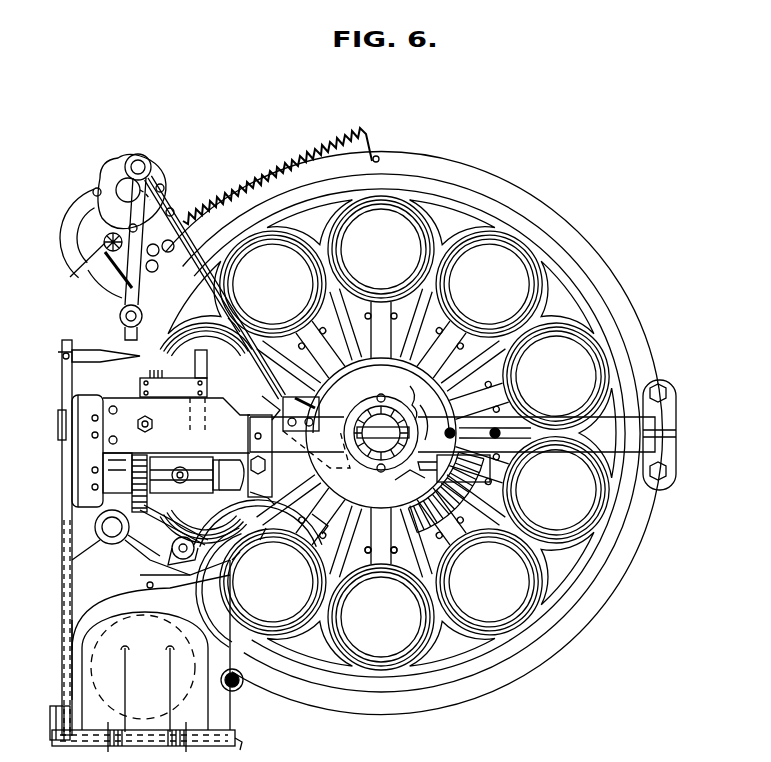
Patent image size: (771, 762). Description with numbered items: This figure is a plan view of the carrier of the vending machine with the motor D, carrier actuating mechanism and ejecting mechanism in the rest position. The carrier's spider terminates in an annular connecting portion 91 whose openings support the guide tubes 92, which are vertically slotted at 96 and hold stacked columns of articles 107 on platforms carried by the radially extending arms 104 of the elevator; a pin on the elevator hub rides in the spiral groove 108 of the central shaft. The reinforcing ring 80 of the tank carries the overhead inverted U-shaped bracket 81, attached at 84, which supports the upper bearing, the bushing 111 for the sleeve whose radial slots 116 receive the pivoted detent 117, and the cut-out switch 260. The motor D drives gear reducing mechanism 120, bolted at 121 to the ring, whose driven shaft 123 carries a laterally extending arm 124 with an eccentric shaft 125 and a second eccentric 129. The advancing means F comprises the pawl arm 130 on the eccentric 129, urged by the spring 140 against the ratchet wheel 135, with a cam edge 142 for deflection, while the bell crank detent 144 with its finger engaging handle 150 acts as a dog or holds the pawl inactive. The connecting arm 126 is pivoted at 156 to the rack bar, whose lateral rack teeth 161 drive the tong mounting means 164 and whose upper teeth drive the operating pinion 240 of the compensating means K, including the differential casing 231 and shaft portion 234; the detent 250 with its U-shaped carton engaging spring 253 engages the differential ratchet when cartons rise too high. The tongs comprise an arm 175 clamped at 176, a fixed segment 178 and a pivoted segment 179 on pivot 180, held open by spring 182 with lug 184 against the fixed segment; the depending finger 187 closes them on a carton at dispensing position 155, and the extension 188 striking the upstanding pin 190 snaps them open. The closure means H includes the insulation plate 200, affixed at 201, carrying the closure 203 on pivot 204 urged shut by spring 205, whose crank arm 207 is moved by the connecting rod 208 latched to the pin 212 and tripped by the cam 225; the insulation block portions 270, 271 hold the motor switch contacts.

The reinforcing ring 80 is at (588, 613).
The annular connecting portion 91 is at (578, 582).
The guide tubes 92 is at (407, 663).
The articles 107 is at (391, 433).
The pawl arm 130 is at (220, 297).
The carrier advancing means F is at (236, 322).
The vertical slots 96 is at (394, 557).
The bell crank detent 144 is at (340, 393).
The bushing 111 is at (377, 482).
The pivoted detent 117 is at (422, 432).
The inverted U-shaped bracket 81 is at (452, 434).
The attachment of bracket leg 84 is at (666, 472).
The cut-out switch 260 is at (454, 468).
The radially extending arms 104 is at (462, 512).
The spiral groove 108 is at (396, 485).
The radial slots 116 is at (410, 392).
The ratchet wheel 135 is at (420, 410).
The finger engaging handle 150 is at (300, 385).
The cam edge 142 is at (275, 398).
The differential shaft portion 234 is at (330, 530).
The extension 188 is at (275, 503).
The spring 140 is at (295, 198).
The laterally extending arm 124 is at (172, 188).
The eccentric shaft 125 is at (160, 166).
The second eccentric 129 is at (142, 160).
The driven shaft 123 is at (116, 174).
The gear reducing mechanism 120 is at (78, 274).
The motor D is at (54, 270).
The bolt means 121 is at (165, 260).
The connecting arm 126 is at (125, 300).
The pivot 156 is at (120, 322).
The connecting rod 208 is at (63, 574).
The motor control closure means H is at (54, 619).
The pin 212 is at (58, 352).
The cam 225 is at (58, 438).
The insulation block portion 270 is at (78, 464).
The insulation block portion 271 is at (96, 472).
The detent 250 is at (173, 377).
The U-shaped carton engaging spring 253 is at (208, 371).
The lateral rack teeth 161 is at (110, 505).
The operating pinion 240 is at (138, 456).
The depending finger 187 is at (210, 460).
The compensating means K is at (212, 462).
The differential casing 231 is at (250, 445).
The tong mounting means 164 is at (115, 527).
The arm 175 is at (160, 530).
The pivot 180 is at (193, 545).
The spring 182 is at (140, 557).
The attachment 201 is at (146, 586).
The lug 184 is at (172, 582).
The clamp 176 is at (72, 547).
The fixed segment 178 is at (232, 616).
The pivoted segment 179 is at (264, 536).
The dispensing position 155 is at (259, 571).
The insulation plate 200 is at (225, 720).
The closure 203 is at (143, 667).
The spring 205 is at (128, 690).
The pivot 204 is at (242, 746).
The crank arm 207 is at (50, 730).
The upstanding pin 190 is at (243, 679).